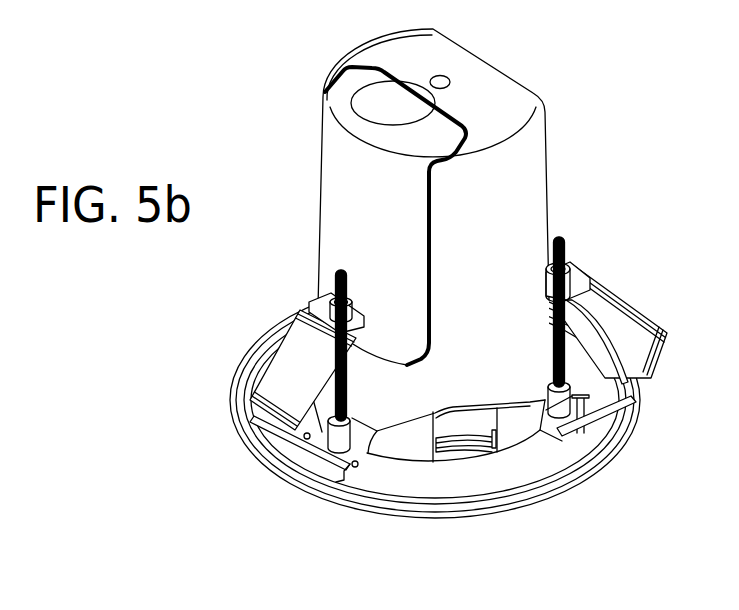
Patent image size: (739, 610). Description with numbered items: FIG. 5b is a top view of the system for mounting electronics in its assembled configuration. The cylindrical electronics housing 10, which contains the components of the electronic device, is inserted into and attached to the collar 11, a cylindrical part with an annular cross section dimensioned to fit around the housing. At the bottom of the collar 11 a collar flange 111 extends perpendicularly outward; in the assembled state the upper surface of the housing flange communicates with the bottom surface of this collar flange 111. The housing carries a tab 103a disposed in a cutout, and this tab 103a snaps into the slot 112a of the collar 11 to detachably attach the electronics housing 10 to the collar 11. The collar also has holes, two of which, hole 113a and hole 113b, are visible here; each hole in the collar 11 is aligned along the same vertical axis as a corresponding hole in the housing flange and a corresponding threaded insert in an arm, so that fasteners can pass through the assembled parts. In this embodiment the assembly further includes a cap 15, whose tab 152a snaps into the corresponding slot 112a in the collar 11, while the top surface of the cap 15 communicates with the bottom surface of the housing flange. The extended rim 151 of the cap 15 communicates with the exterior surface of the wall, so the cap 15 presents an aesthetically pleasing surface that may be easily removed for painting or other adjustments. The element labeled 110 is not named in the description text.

The electronics housing 10 is at (544, 184).
The collar 11 is at (445, 406).
The cap 15 is at (455, 517).
The tab 103a is at (432, 451).
The support arm 110 is at (607, 433).
The collar flange 111 is at (505, 478).
The slot 112a is at (493, 430).
The hole 113a is at (565, 339).
The hole 113b is at (344, 380).
The extended rim 151 is at (630, 408).
The tab 152a is at (467, 428).